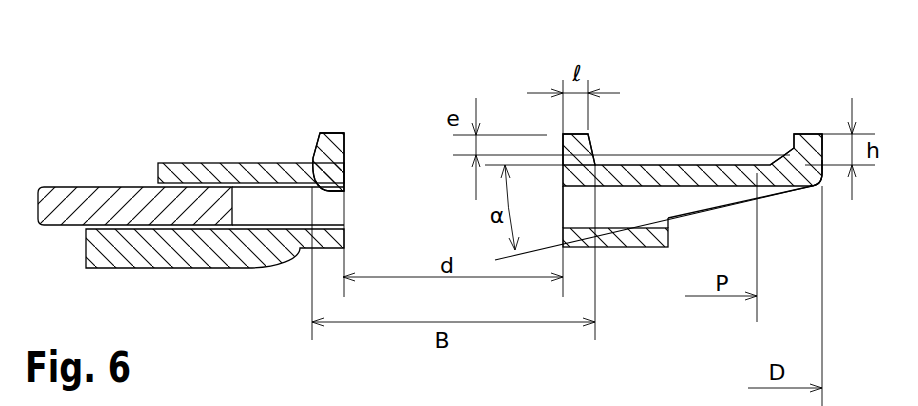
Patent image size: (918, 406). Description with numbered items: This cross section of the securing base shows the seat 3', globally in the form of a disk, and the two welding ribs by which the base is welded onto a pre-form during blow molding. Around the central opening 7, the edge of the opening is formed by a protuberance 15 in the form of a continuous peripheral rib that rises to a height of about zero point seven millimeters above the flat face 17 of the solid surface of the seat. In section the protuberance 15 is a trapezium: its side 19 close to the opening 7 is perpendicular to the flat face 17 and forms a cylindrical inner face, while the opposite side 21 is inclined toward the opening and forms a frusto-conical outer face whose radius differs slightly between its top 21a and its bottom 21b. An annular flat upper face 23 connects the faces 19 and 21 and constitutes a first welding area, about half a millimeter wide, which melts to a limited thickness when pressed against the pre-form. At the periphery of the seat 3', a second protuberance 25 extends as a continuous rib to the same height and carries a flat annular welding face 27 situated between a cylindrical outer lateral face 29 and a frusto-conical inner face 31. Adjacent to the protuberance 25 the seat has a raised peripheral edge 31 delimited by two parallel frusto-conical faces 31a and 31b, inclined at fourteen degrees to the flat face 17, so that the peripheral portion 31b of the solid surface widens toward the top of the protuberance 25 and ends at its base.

The seat 3' is at (191, 191).
The opening 7 is at (455, 225).
The protuberance 15 is at (587, 150).
The flat face 17 is at (668, 162).
The side close to the opening 19 is at (344, 173).
The opposite side 21 is at (313, 151).
The top of the frusto-conical face 21a is at (317, 150).
The bottom of the frusto-conical face 21b is at (330, 192).
The annular flat upper face 23 is at (325, 133).
The protuberance 25 is at (822, 160).
The flat annular welding face 27 is at (797, 134).
The cylindrical outer lateral face 29 is at (824, 142).
The raised peripheral edge 31 is at (772, 157).
The frusto-conical face 31a is at (790, 194).
The frusto-conical face 31b is at (753, 153).